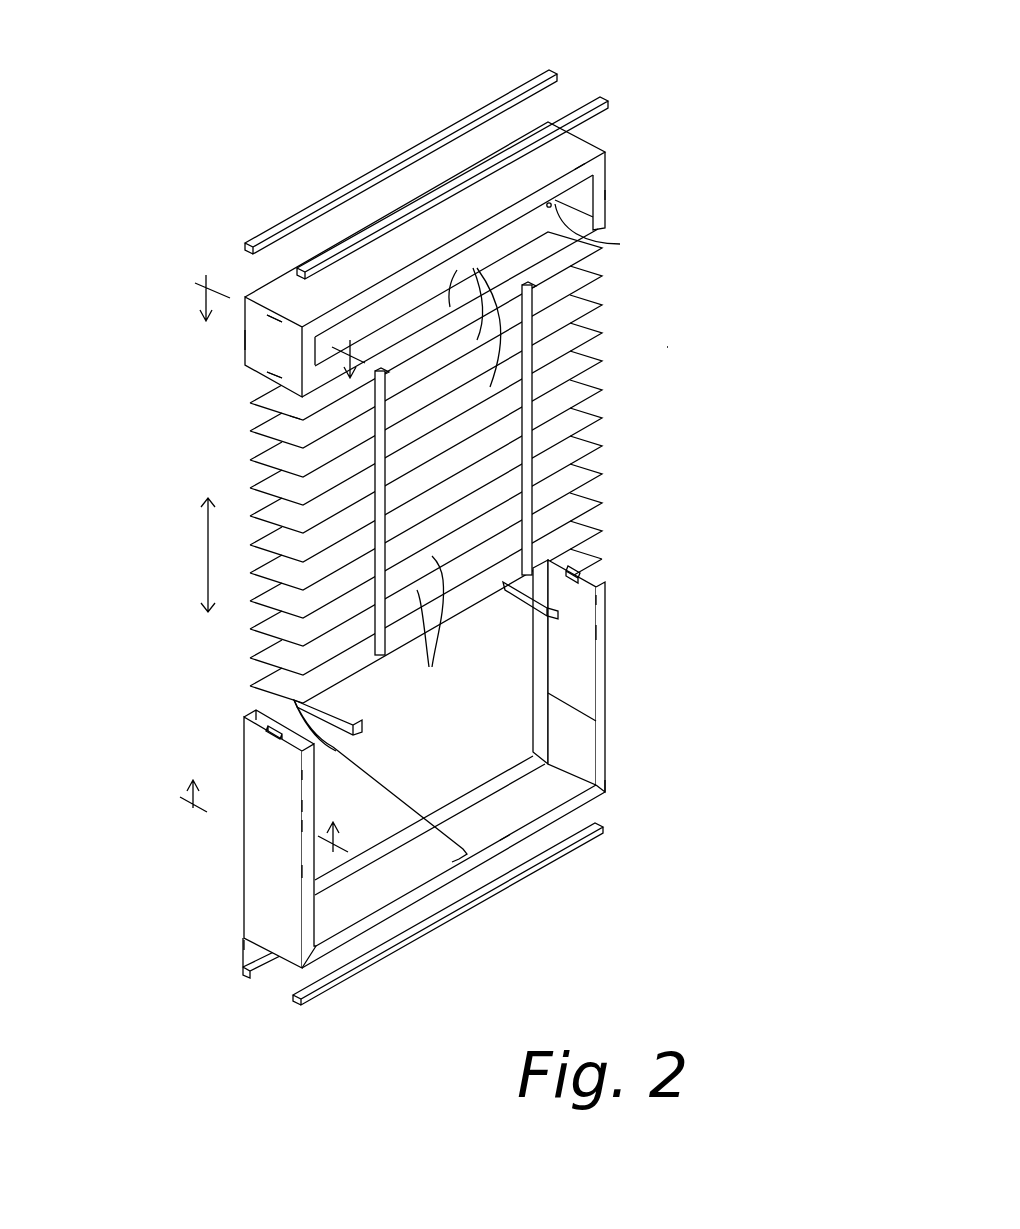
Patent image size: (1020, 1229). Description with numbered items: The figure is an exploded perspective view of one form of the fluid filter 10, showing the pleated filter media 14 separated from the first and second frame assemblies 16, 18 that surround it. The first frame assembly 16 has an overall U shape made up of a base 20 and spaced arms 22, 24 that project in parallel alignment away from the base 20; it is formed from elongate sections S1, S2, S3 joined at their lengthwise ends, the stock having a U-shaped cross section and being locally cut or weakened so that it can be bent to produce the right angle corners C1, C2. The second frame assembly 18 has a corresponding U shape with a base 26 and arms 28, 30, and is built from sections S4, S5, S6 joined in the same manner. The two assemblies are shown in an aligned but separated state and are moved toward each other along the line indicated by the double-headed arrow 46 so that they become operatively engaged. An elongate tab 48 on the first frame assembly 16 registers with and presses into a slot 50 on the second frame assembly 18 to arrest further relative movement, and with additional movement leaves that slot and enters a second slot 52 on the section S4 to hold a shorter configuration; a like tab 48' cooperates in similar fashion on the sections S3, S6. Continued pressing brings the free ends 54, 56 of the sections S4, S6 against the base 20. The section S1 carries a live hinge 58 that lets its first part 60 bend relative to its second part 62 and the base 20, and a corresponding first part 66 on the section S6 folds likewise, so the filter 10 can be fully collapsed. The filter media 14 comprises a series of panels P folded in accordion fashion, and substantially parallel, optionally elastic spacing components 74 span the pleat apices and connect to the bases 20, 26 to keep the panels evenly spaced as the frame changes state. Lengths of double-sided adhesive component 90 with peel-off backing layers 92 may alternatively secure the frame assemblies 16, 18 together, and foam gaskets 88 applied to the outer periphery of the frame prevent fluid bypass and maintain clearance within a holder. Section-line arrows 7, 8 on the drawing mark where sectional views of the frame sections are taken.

The fluid filter 10 is at (684, 349).
The filter media 14 is at (420, 456).
The first frame assembly 16 is at (270, 826).
The second frame assembly 18 is at (262, 293).
The base 20 is at (411, 870).
The arm 22 is at (290, 905).
The arm 24 is at (582, 666).
The base 26 is at (494, 200).
The arm 28 is at (244, 351).
The arm 30 is at (607, 176).
The double-headed arrow 46 is at (208, 538).
The elongate tab 48 is at (216, 712).
The tab 48' is at (625, 524).
The slot 50 is at (268, 377).
The slot 52 is at (272, 325).
The free end 54 is at (290, 402).
The free end 56 is at (620, 244).
The live hinge 58 is at (288, 872).
The first part 60 is at (262, 807).
The second part 62 is at (290, 923).
The first part 66 is at (583, 626).
The spacing components 74 is at (379, 637).
The gaskets 88 is at (425, 192).
The double-sided adhesive component 90 is at (330, 712).
The peel-off backing layers 92 is at (518, 590).
The panels P is at (459, 470).
The section S1 is at (268, 773).
The section S2 is at (503, 821).
The section S3 is at (582, 598).
The section S4 is at (277, 353).
The section S5 is at (588, 157).
The section S6 is at (603, 195).
The right angle corner C1 is at (243, 948).
The right angle corner C2 is at (612, 800).
The section line 7 is at (264, 815).
The section line 8 is at (282, 326).